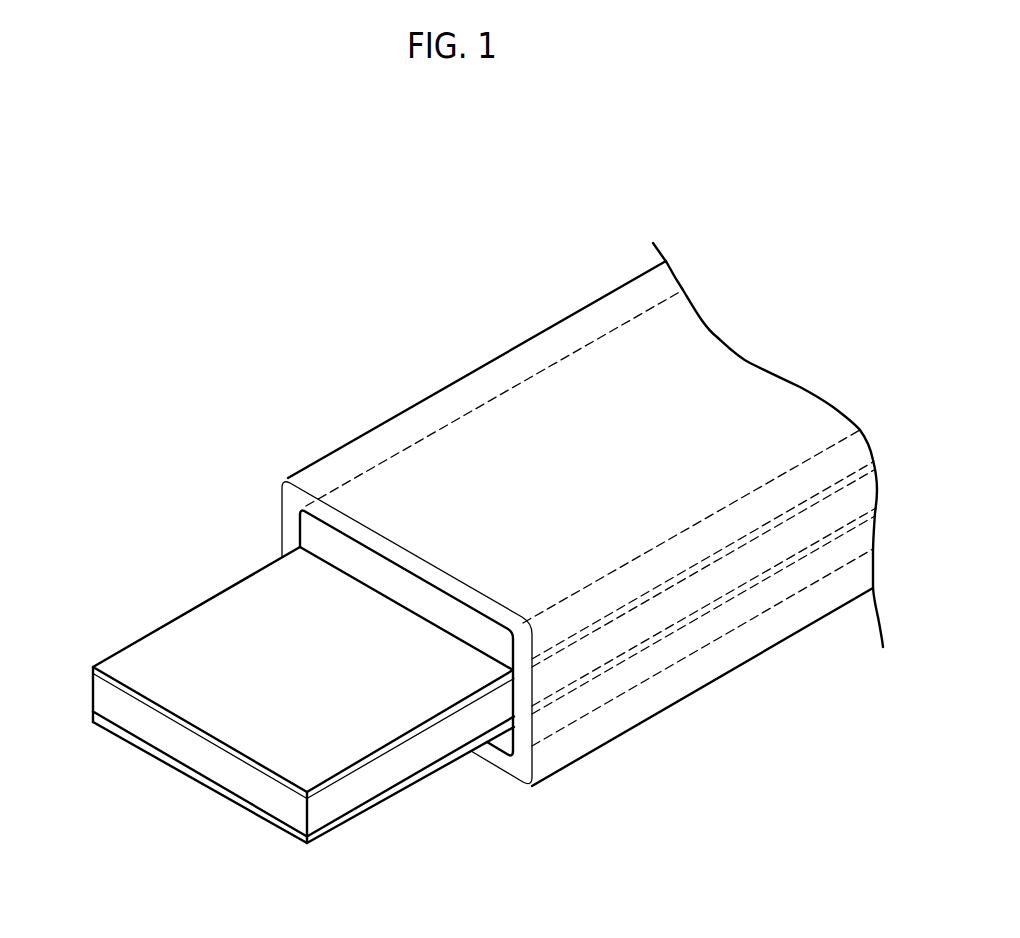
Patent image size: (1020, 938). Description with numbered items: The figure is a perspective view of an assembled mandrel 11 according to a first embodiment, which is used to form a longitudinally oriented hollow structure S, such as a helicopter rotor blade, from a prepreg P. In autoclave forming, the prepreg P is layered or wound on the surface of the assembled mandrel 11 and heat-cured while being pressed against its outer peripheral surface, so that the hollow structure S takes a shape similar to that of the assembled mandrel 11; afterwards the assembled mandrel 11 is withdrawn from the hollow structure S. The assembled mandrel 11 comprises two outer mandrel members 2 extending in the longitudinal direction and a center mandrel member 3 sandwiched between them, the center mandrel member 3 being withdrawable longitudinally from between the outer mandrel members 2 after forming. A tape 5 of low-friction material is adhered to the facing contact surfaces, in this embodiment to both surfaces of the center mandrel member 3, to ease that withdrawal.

The assembled mandrel 11 is at (462, 669).
The outer mandrel member 2 is at (318, 533).
The center mandrel member 3 is at (184, 700).
The tape 5 is at (198, 633).
The hollow structure S is at (473, 447).
The prepreg P is at (553, 327).